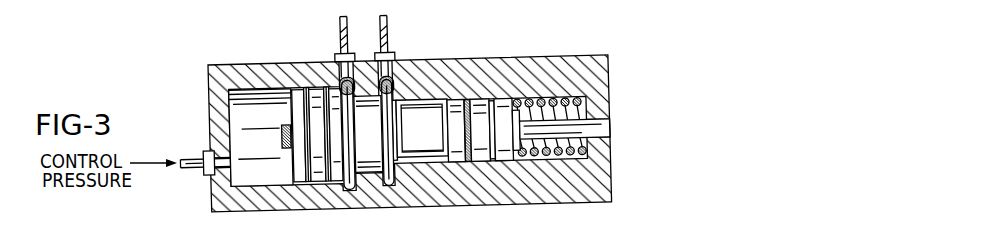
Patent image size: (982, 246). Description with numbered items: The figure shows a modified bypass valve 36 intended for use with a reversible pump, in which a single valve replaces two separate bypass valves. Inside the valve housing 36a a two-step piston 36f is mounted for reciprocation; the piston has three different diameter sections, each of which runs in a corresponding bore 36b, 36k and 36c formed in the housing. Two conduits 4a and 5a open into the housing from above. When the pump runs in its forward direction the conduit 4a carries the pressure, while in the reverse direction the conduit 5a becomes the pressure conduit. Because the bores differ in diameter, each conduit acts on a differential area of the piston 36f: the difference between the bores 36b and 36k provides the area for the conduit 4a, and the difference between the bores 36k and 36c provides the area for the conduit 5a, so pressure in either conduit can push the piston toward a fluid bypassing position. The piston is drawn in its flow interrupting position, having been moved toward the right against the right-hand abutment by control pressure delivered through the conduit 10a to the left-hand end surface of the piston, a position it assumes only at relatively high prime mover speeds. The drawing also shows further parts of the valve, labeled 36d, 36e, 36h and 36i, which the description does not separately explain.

The valve 36 is at (621, 80).
The valve housing 36a is at (541, 66).
The bore 36b is at (260, 180).
The bore 36c is at (433, 158).
The spool land 36d is at (396, 163).
The seal ring 36e is at (351, 190).
The two-step piston 36f is at (288, 102).
The piston chamber 36h is at (389, 134).
The spring rod 36i is at (587, 150).
The bore 36k is at (378, 177).
The conduit 10a is at (182, 167).
The conduit 4a is at (339, 33).
The conduit 5a is at (388, 40).